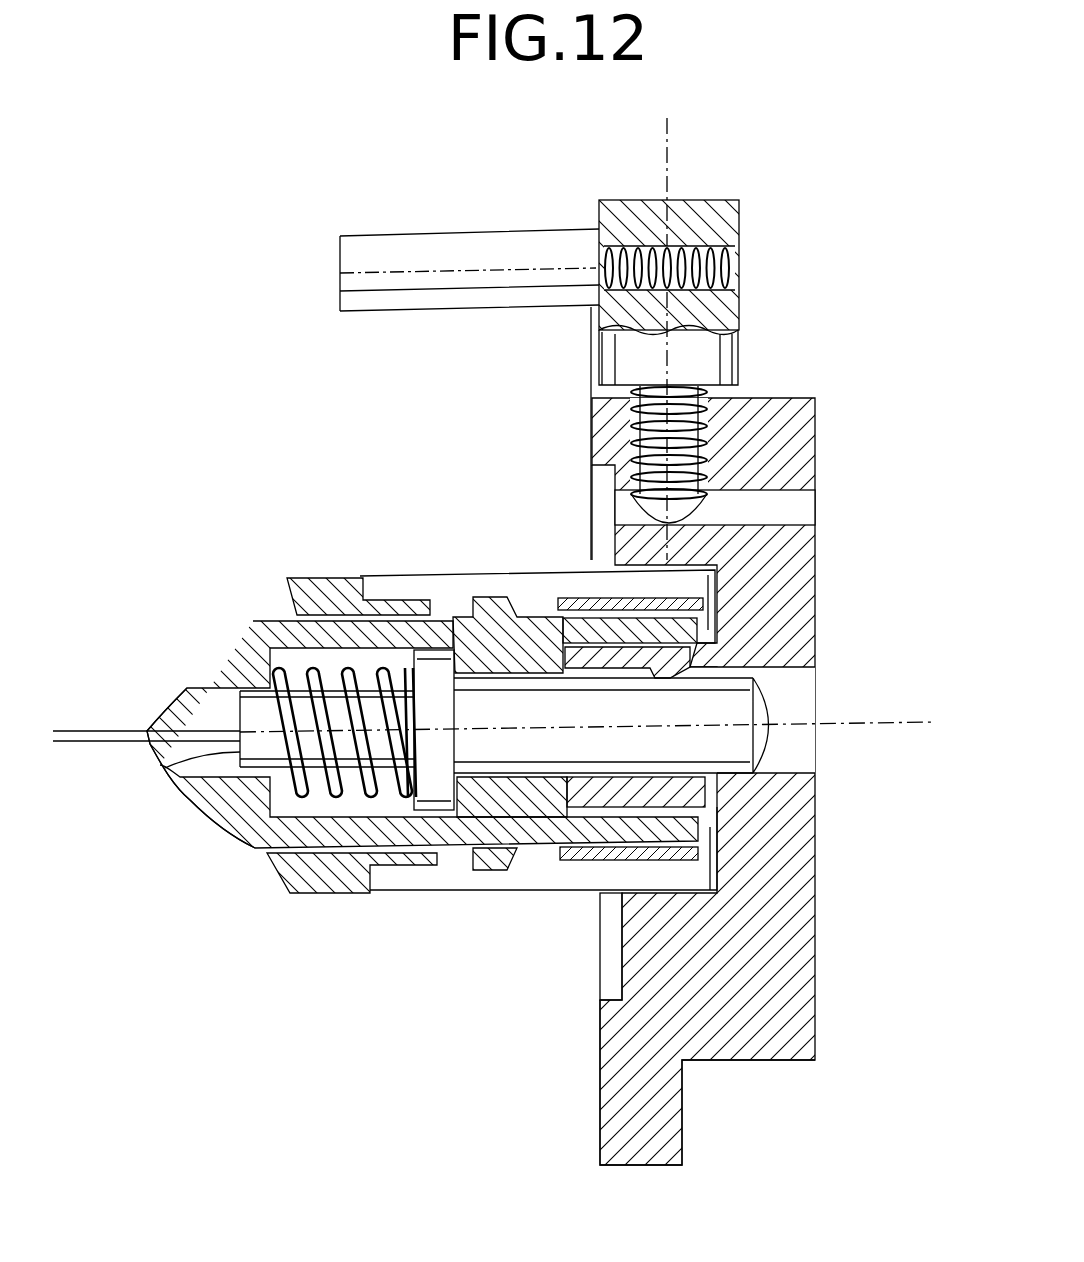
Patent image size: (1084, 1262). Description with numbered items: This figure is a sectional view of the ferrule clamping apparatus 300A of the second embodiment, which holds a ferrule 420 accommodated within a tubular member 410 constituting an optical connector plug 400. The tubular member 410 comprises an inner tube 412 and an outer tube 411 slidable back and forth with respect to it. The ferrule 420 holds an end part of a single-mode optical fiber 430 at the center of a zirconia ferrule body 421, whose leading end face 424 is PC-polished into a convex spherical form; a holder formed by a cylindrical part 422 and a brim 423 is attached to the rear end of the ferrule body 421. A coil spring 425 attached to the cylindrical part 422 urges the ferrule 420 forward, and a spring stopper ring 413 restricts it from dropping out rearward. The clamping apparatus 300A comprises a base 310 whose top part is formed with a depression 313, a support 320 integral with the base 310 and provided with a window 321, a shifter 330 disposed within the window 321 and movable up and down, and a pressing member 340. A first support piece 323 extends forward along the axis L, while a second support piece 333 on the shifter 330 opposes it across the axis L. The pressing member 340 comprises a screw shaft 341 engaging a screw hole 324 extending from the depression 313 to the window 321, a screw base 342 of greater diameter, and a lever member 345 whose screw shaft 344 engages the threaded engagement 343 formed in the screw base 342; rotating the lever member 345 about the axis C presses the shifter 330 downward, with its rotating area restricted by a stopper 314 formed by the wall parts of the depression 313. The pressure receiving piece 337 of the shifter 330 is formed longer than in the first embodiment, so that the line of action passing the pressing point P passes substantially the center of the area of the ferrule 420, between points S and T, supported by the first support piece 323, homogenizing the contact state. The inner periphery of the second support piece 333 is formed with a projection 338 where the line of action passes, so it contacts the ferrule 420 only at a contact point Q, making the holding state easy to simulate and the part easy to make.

The clamping apparatus 300A is at (843, 404).
The base 310 is at (600, 1098).
The depression 313 is at (600, 393).
The stopper 314 is at (600, 338).
The support 320 is at (620, 962).
The window 321 is at (762, 512).
The first support piece 323 is at (578, 800).
The screw hole 324 is at (713, 400).
The shifter 330 is at (821, 597).
The second support piece 333 is at (600, 660).
The pressure receiving piece 337 is at (605, 506).
The projection 338 is at (800, 662).
The pressing member 340 is at (535, 226).
The screw shaft 341 is at (600, 445).
The screw base 342 is at (740, 206).
The internal thread 343 is at (741, 266).
The screw shaft 344 is at (608, 262).
The lever member 345 is at (400, 252).
The optical connector plug 400 is at (246, 563).
The tubular member 410 is at (322, 578).
The outer tube 411 is at (370, 598).
The inner tube 412 is at (438, 613).
The spring stopper ring 413 is at (222, 662).
The ferrule 420 is at (522, 752).
The ferrule body 421 is at (742, 750).
The cylindrical part 422 is at (240, 752).
The brim 423 is at (440, 856).
The leading end face 424 is at (800, 690).
The coil spring 425 is at (292, 830).
The optical fiber 430 is at (122, 742).
The axis C is at (678, 160).
The axis L is at (880, 725).
The pressing point P is at (760, 540).
The contact point Q is at (676, 679).
The point S is at (765, 778).
The point T is at (527, 871).